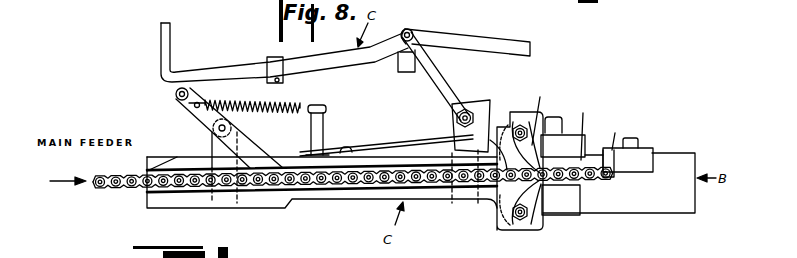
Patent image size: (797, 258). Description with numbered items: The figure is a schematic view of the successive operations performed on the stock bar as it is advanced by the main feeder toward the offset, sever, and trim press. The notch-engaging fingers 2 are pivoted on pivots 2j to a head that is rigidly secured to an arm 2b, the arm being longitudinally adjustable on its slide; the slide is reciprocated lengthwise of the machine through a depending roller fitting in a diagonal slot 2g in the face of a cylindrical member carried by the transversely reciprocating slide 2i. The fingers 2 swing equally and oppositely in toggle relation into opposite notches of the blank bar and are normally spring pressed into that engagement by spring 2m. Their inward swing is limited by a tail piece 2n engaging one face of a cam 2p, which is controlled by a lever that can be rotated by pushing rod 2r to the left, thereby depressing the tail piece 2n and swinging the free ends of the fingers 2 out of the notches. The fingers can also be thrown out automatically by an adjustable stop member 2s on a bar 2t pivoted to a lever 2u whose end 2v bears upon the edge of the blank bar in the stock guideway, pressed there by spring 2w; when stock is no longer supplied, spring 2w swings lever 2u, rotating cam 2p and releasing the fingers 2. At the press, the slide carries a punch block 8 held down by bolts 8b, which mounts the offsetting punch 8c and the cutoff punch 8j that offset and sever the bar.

The notch-engaging fingers 2 is at (512, 197).
The arm 2b is at (335, 202).
The diagonal slot 2g is at (447, 75).
The transversely reciprocating slide 2i is at (513, 120).
The pivots 2j is at (522, 223).
The spring 2m is at (387, 146).
The tail piece 2n is at (452, 123).
The cam 2p is at (483, 104).
The rod 2r is at (232, 67).
The adjustable stop member 2s is at (409, 73).
The bar 2t is at (350, 72).
The lever 2u is at (180, 99).
The end 2v is at (305, 156).
The spring 2w is at (258, 110).
The punch block 8 is at (688, 200).
The bolts 8b is at (642, 157).
The offsetting punch 8c is at (579, 188).
The cutoff punch 8j is at (608, 183).